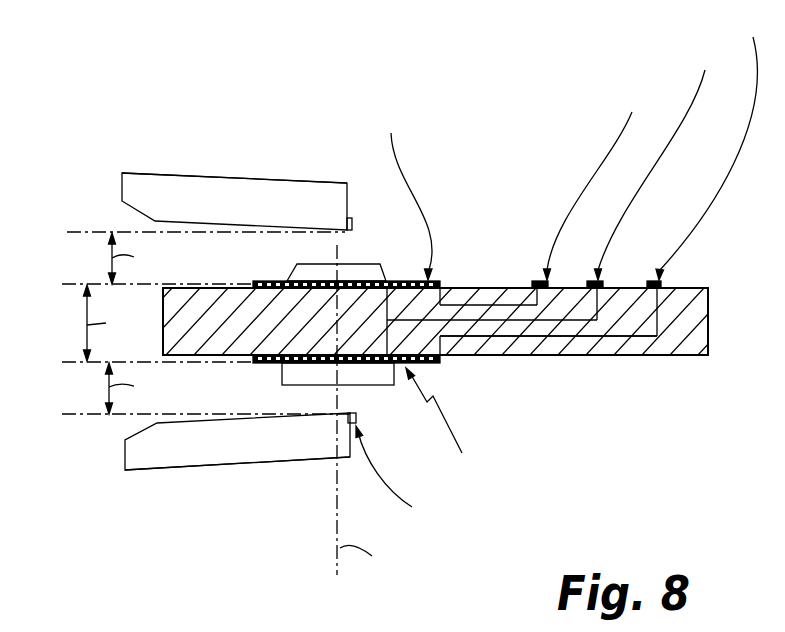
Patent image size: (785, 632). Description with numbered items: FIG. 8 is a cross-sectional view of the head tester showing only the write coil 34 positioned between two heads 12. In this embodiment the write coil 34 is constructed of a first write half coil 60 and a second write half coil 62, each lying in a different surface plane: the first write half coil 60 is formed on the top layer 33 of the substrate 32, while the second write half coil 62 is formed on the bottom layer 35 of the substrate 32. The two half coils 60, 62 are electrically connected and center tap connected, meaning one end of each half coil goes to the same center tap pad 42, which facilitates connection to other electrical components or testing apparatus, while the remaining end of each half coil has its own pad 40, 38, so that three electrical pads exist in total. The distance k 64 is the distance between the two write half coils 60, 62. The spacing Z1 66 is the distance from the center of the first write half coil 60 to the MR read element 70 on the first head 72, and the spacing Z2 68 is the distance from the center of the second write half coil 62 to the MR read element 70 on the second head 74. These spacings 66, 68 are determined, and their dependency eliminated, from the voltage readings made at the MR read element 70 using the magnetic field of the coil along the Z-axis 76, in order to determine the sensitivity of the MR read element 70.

The head 12 is at (133, 172).
The substrate 32 is at (693, 328).
The top layer 33 is at (460, 272).
The write coil 34 is at (457, 385).
The bottom layer 35 is at (629, 368).
The pad 38 is at (665, 283).
The pad 40 is at (535, 280).
The center tap pad 42 is at (607, 282).
The first write half coil 60 is at (345, 262).
The second write half coil 62 is at (340, 388).
The distance k 64 is at (87, 320).
The spacing Z1 66 is at (112, 258).
The spacing Z2 68 is at (109, 387).
The MR read element 70 is at (352, 220).
The first head 72 is at (300, 190).
The second head 74 is at (282, 463).
The Z-axis 76 is at (337, 555).